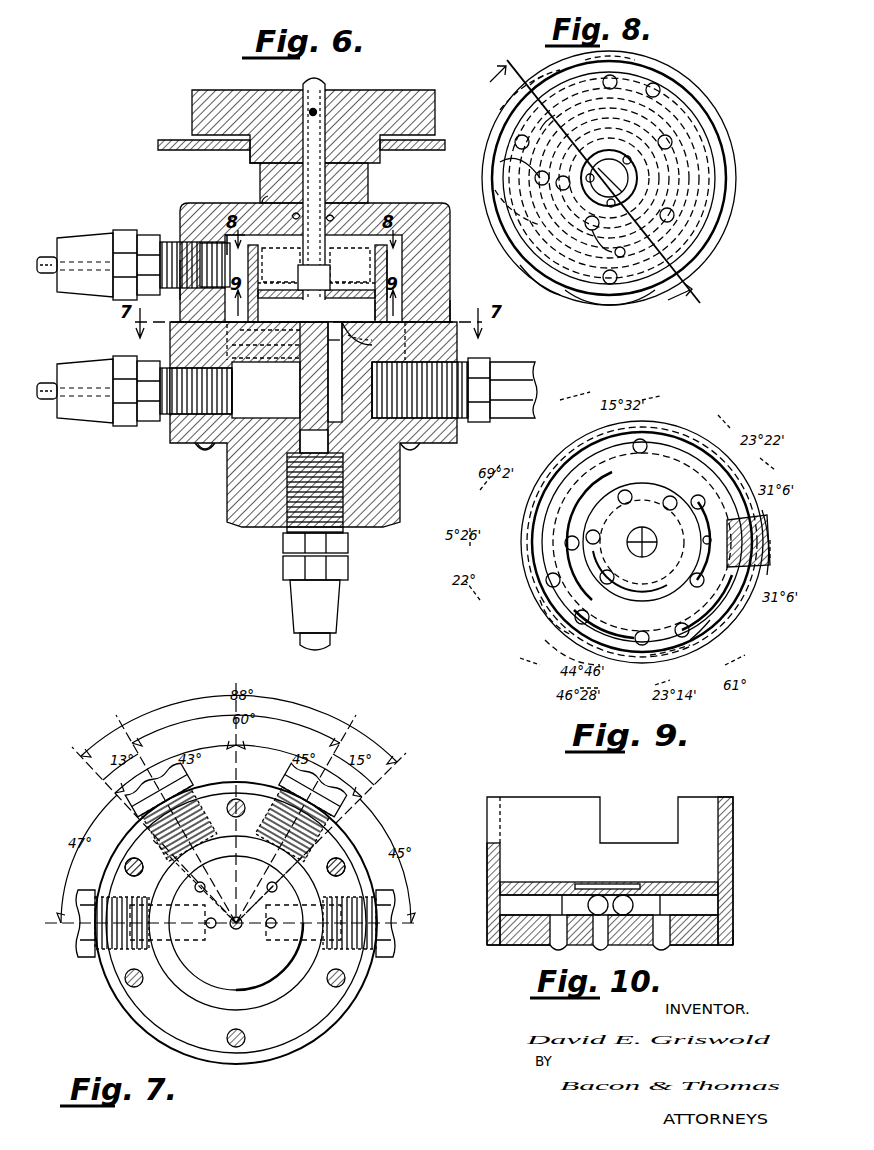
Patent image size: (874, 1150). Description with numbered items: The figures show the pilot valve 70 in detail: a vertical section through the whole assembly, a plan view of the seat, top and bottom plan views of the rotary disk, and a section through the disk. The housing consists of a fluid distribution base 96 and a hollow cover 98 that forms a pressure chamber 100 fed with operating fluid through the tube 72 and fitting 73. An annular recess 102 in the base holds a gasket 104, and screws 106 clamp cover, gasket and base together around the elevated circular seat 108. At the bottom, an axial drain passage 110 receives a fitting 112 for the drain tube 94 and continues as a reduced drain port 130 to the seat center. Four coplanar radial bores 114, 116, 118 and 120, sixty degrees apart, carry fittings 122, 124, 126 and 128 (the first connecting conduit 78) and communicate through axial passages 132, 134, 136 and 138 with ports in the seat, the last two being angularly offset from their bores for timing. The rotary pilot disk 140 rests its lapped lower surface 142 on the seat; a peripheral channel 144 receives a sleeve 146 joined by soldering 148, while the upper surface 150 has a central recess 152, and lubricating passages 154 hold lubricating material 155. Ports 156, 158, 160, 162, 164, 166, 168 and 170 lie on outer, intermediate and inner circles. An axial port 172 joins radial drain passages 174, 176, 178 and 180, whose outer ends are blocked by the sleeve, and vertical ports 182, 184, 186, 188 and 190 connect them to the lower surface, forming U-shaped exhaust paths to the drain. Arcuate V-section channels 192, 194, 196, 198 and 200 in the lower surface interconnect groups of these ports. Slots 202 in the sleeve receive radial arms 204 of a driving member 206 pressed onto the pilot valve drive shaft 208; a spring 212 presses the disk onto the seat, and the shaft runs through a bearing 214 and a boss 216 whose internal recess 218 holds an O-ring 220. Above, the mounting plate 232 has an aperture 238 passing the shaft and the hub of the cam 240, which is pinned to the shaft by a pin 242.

In FIG. 6, the pilot valve 70 is at (137, 197).
In FIG. 6, the tube 72 is at (52, 250).
In FIG. 6, the fitting 73 is at (148, 230).
In FIG. 6, the conduit 78 is at (46, 422).
In FIG. 6, the drain tube 94 is at (330, 645).
In FIG. 6, the fluid distribution base 96 is at (175, 446).
In FIG. 6, the cover 98 is at (436, 250).
In FIG. 6, the pressure chamber 100 is at (226, 248).
In FIG. 6, the annular recess 102 is at (225, 334).
In FIG. 7, the annular recess 102 is at (178, 982).
In FIG. 6, the gasket 104 is at (436, 316).
In FIG. 7, the gasket 104 is at (280, 1045).
In FIG. 6, the screws 106 is at (204, 455).
In FIG. 7, the screws 106 is at (124, 982).
In FIG. 6, the circular seat 108 is at (348, 328).
In FIG. 7, the circular seat 108 is at (257, 978).
In FIG. 6, the axial drain passage 110 is at (335, 480).
In FIG. 6, the fitting 112 is at (283, 566).
In FIG. 6, the radial bore 114 is at (252, 408).
In FIG. 7, the radial bore 114 is at (145, 948).
In FIG. 7, the radial bore 116 is at (138, 857).
In FIG. 7, the radial bore 118 is at (335, 857).
In FIG. 6, the radial bore 120 is at (372, 412).
In FIG. 7, the radial bore 120 is at (342, 949).
In FIG. 6, the fitting 122 is at (121, 426).
In FIG. 7, the fitting 122 is at (80, 940).
In FIG. 7, the fitting 124 is at (180, 786).
In FIG. 7, the fitting 126 is at (290, 786).
In FIG. 6, the fitting 128 is at (500, 358).
In FIG. 7, the fitting 128 is at (392, 948).
In FIG. 6, the drain port 130 is at (306, 430).
In FIG. 7, the drain port 130 is at (234, 928).
In FIG. 6, the axial passage 132 is at (290, 360).
In FIG. 7, the axial passage 132 is at (210, 930).
In FIG. 7, the axial passage 134 is at (192, 887).
In FIG. 7, the axial passage 136 is at (278, 887).
In FIG. 6, the axial passage 138 is at (345, 400).
In FIG. 7, the axial passage 138 is at (270, 930).
In FIG. 6, the rotary pilot disk 140 is at (360, 290).
In FIG. 8, the rotary pilot disk 140 is at (712, 235).
In FIG. 9, the rotary pilot disk 140 is at (662, 424).
In FIG. 10, the rotary pilot disk 140 is at (492, 880).
In FIG. 6, the lower surface 142 is at (410, 340).
In FIG. 9, the lower surface 142 is at (552, 570).
In FIG. 10, the lower surface 142 is at (692, 950).
In FIG. 9, the peripheral channel 144 is at (755, 558).
In FIG. 10, the peripheral channel 144 is at (733, 915).
In FIG. 6, the sleeve 146 is at (388, 278).
In FIG. 8, the sleeve 146 is at (705, 250).
In FIG. 9, the sleeve 146 is at (770, 530).
In FIG. 10, the sleeve 146 is at (733, 882).
In FIG. 10, the soldering 148 is at (705, 888).
In FIG. 8, the upper surface 150 is at (540, 80).
In FIG. 10, the upper surface 150 is at (540, 882).
In FIG. 10, the central recess 152 is at (608, 884).
In FIG. 6, the lubricating passages 154 is at (333, 354).
In FIG. 8, the lubricating passages 154 is at (640, 165).
In FIG. 9, the lubricating passages 154 is at (670, 556).
In FIG. 6, the lubricating material 155 is at (281, 260).
In FIG. 9, the lubricating material 155 is at (592, 528).
In FIG. 8, the port 156 is at (668, 135).
In FIG. 9, the port 156 is at (690, 640).
In FIG. 8, the port 158 is at (612, 285).
In FIG. 9, the port 158 is at (636, 440).
In FIG. 8, the port 160 is at (515, 140).
In FIG. 9, the port 160 is at (545, 585).
In FIG. 8, the port 162 is at (695, 212).
In FIG. 9, the port 162 is at (716, 524).
In FIG. 6, the port 164 is at (246, 242).
In FIG. 8, the port 164 is at (520, 180).
In FIG. 9, the port 164 is at (565, 550).
In FIG. 8, the port 166 is at (695, 155).
In FIG. 9, the port 166 is at (715, 600).
In FIG. 8, the port 168 is at (617, 249).
In FIG. 9, the port 168 is at (625, 490).
In FIG. 6, the port 170 is at (290, 334).
In FIG. 8, the port 170 is at (558, 172).
In FIG. 9, the port 170 is at (583, 530).
In FIG. 6, the axial port 172 is at (348, 344).
In FIG. 9, the axial port 172 is at (638, 546).
In FIG. 10, the axial port 172 is at (592, 947).
In FIG. 8, the radial drain passage 174 is at (508, 105).
In FIG. 9, the radial drain passage 174 is at (575, 617).
In FIG. 10, the radial drain passage 174 is at (500, 905).
In FIG. 8, the radial drain passage 176 is at (657, 85).
In FIG. 9, the radial drain passage 176 is at (668, 626).
In FIG. 6, the radial drain passage 178 is at (388, 300).
In FIG. 8, the radial drain passage 178 is at (725, 175).
In FIG. 9, the radial drain passage 178 is at (708, 541).
In FIG. 8, the radial drain passage 180 is at (672, 222).
In FIG. 9, the radial drain passage 180 is at (690, 500).
In FIG. 10, the radial drain passage 180 is at (733, 905).
In FIG. 8, the vertical port 182 is at (550, 132).
In FIG. 9, the vertical port 182 is at (560, 588).
In FIG. 10, the vertical port 182 is at (562, 895).
In FIG. 8, the vertical port 184 is at (512, 63).
In FIG. 9, the vertical port 184 is at (548, 622).
In FIG. 10, the vertical port 184 is at (500, 925).
In FIG. 8, the vertical port 186 is at (617, 78).
In FIG. 9, the vertical port 186 is at (668, 656).
In FIG. 8, the vertical port 188 is at (682, 190).
In FIG. 9, the vertical port 188 is at (748, 541).
In FIG. 8, the vertical port 190 is at (607, 226).
In FIG. 9, the vertical port 190 is at (665, 496).
In FIG. 10, the vertical port 190 is at (628, 897).
In FIG. 8, the first arcuate channel 192 is at (535, 285).
In FIG. 9, the first arcuate channel 192 is at (668, 434).
In FIG. 10, the first arcuate channel 192 is at (733, 947).
In FIG. 8, the second arcuate channel 194 is at (608, 62).
In FIG. 9, the second arcuate channel 194 is at (555, 645).
In FIG. 10, the second arcuate channel 194 is at (500, 948).
In FIG. 8, the third arcuate channel 196 is at (585, 305).
In FIG. 9, the third arcuate channel 196 is at (695, 590).
In FIG. 10, the third arcuate channel 196 is at (530, 950).
In FIG. 9, the fourth arcuate channel 198 is at (568, 538).
In FIG. 8, the fifth arcuate channel 200 is at (722, 100).
In FIG. 9, the fifth arcuate channel 200 is at (611, 607).
In FIG. 10, the fifth arcuate channel 200 is at (566, 947).
In FIG. 10, the axially extending slots 202 is at (487, 812).
In FIG. 6, the radial arms 204 is at (388, 262).
In FIG. 8, the radial arms 204 is at (730, 100).
In FIG. 6, the driving member 206 is at (350, 252).
In FIG. 8, the driving member 206 is at (500, 214).
In FIG. 6, the pilot valve drive shaft 208 is at (320, 80).
In FIG. 6, the spring 212 is at (284, 211).
In FIG. 6, the bearing 214 is at (320, 216).
In FIG. 6, the boss 216 is at (368, 177).
In FIG. 6, the internal recess 218 is at (320, 191).
In FIG. 6, the O-ring 220 is at (264, 199).
In FIG. 6, the mounting plate 232 is at (180, 140).
In FIG. 6, the aperture 238 is at (255, 165).
In FIG. 6, the cam 240 is at (208, 90).
In FIG. 6, the pin 242 is at (317, 112).